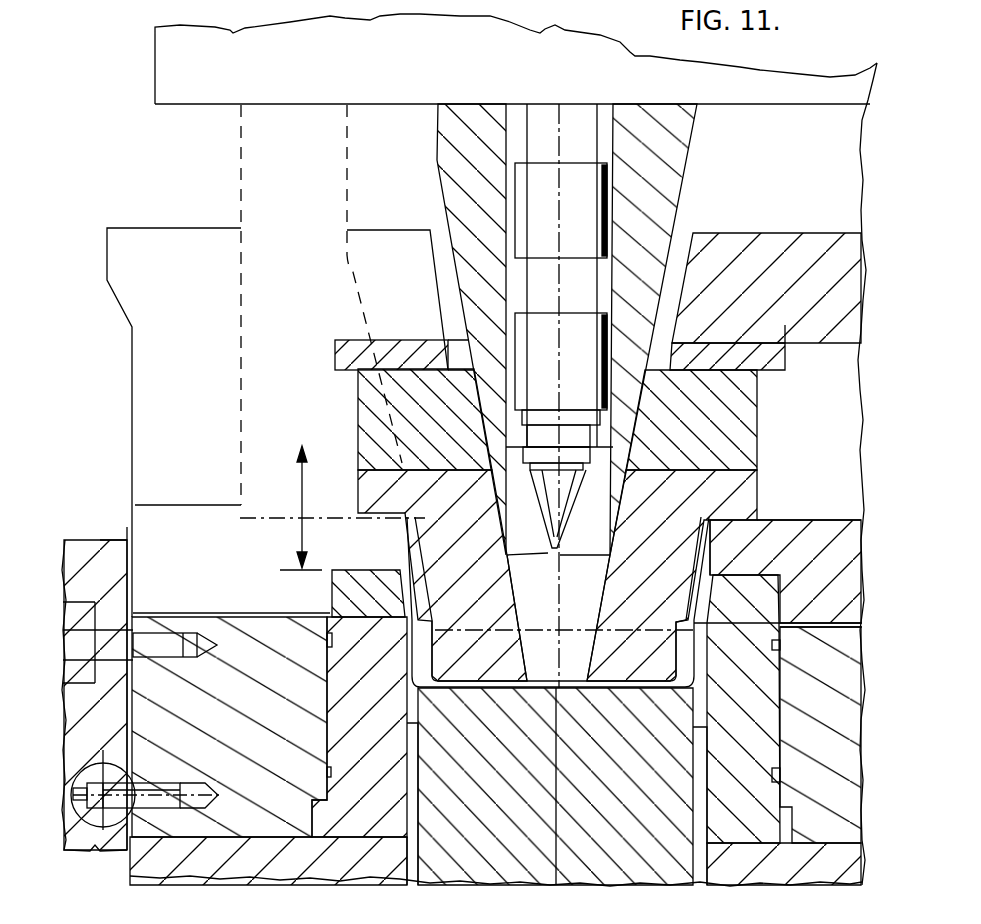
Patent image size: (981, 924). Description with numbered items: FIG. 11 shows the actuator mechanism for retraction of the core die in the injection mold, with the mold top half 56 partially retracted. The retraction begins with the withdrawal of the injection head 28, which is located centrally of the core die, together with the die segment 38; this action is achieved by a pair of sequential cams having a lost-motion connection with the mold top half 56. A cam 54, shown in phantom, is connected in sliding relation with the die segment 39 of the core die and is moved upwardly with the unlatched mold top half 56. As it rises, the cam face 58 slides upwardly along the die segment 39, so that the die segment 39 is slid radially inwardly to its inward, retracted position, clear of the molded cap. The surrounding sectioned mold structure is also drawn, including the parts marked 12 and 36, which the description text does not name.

The mold cavity insert 12 is at (387, 573).
The injection head 28 is at (590, 208).
The nozzle holder sleeve 36 is at (672, 240).
The die segment 38 is at (590, 547).
The die segment 39 is at (358, 395).
The cam 54 is at (242, 150).
The mold top half 56 is at (186, 104).
The cam face 58 is at (350, 275).